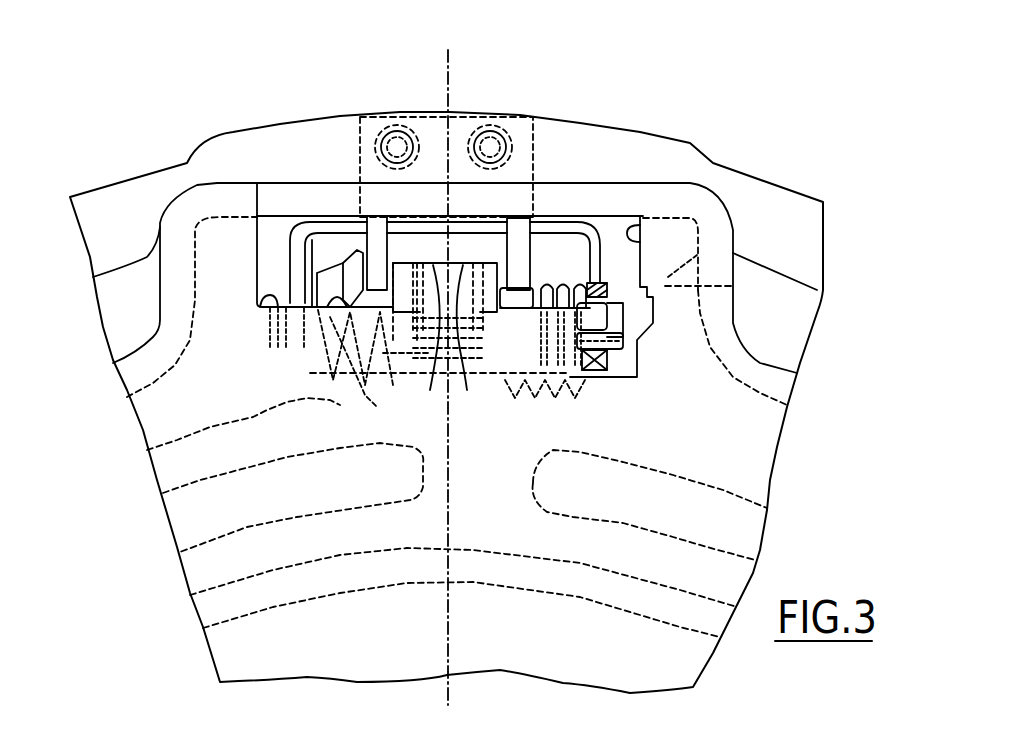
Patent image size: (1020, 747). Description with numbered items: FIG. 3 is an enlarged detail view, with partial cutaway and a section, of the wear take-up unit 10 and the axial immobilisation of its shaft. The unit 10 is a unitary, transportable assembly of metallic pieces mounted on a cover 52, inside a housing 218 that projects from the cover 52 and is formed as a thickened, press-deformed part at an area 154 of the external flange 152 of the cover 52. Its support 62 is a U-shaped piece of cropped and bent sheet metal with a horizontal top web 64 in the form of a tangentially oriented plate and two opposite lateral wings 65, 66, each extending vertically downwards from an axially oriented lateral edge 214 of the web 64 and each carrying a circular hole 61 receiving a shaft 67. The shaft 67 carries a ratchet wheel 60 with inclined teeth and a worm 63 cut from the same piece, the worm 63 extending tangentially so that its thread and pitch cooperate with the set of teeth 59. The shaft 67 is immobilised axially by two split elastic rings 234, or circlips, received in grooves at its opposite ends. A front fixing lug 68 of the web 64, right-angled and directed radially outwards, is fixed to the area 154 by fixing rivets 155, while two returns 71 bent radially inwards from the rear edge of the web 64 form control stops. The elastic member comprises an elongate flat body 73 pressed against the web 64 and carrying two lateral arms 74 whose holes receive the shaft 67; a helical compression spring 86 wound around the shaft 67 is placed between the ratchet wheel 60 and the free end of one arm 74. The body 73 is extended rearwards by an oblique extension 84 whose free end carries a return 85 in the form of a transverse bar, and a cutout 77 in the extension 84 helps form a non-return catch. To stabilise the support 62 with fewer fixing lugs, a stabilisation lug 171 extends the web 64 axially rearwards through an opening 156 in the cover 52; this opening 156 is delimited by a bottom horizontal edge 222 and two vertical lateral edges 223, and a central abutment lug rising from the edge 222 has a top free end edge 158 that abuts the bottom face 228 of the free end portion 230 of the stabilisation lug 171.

The unit 10 is at (640, 347).
The cover 52 is at (715, 160).
The set of teeth 59 is at (333, 410).
The ratchet wheel 60 is at (393, 312).
The circular hole 61 is at (613, 347).
The support 62 is at (610, 210).
The worm 63 is at (333, 233).
The top web 64 is at (573, 217).
The lateral wing 65 is at (297, 272).
The lateral wing 66 is at (623, 267).
The shaft 67 is at (618, 320).
The front fixing lug 68 is at (545, 230).
The returns 71 is at (378, 213).
The flat body 73 is at (603, 270).
The lateral arm 74 is at (317, 250).
The cutout 77 is at (360, 380).
The oblique extension 84 is at (498, 378).
The return 85 is at (547, 512).
The helical compression spring 86 is at (565, 235).
The external flange 152 is at (585, 104).
The area 154 is at (232, 150).
The fixing rivets 155 is at (390, 115).
The opening 156 is at (262, 250).
The top free end edge 158 is at (440, 375).
The stabilisation lug 171 is at (462, 217).
The lateral edge 214 is at (290, 235).
The housing 218 is at (737, 290).
The bottom horizontal edge 222 is at (323, 313).
The lateral edges 223 is at (607, 267).
The bottom face 228 is at (463, 383).
The free end portion 230 is at (440, 250).
The split elastic rings 234 is at (367, 313).